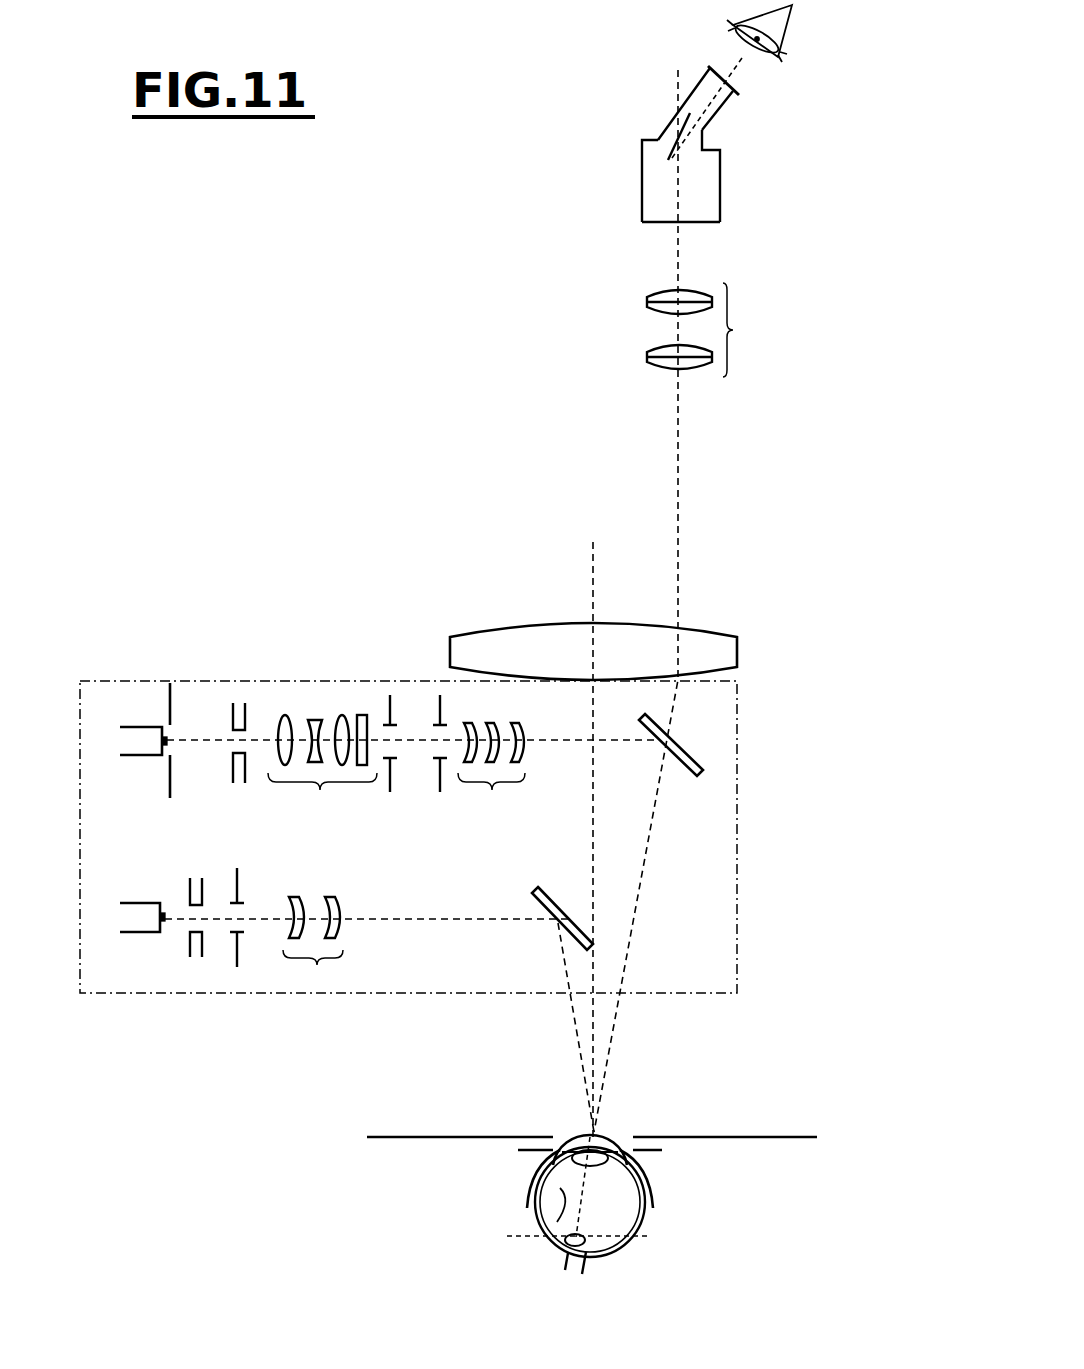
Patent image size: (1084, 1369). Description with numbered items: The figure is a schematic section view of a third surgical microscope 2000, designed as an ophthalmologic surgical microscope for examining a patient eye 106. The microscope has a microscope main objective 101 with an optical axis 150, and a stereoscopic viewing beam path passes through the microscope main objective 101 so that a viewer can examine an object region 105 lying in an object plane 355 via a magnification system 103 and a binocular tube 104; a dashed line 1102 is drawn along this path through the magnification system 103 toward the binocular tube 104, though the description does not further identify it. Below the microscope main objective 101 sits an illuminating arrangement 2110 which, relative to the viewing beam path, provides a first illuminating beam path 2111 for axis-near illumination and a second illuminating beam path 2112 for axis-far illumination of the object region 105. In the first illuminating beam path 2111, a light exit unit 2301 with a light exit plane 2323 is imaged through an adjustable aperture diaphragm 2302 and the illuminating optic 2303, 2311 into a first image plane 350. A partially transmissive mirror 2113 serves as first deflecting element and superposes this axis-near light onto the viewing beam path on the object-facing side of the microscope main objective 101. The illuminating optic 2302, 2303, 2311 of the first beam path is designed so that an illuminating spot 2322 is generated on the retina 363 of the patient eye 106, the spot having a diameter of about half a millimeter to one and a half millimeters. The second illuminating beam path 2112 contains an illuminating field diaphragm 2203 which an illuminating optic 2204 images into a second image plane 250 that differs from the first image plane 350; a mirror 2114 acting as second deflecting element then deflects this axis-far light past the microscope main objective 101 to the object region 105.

The binocular tube 104 is at (705, 190).
The observation optical axis 1102 is at (680, 258).
The magnification system 103 is at (733, 330).
The optical axis 150 is at (595, 570).
The microscope main objective 101 is at (735, 655).
The surgical microscope 2000 is at (363, 330).
The illuminating arrangement 2110 is at (297, 681).
The light exit unit 2301 is at (184, 730).
The light exit plane 2323 is at (168, 773).
The adjustable aperture diaphragm 2302 is at (237, 702).
The illuminating optic 2303 is at (320, 790).
The first illuminating beam path 2111 is at (408, 740).
The illuminating optic 2311 is at (492, 790).
The mirror 2113 is at (697, 762).
The second illuminating beam path 2112 is at (413, 924).
The illuminating field diaphragm 2203 is at (237, 952).
The illuminating optic 2204 is at (317, 965).
The mirror 2114 is at (575, 920).
The object plane 355 is at (733, 1136).
The object region 105 is at (618, 1120).
The patient eye 106 is at (640, 1235).
The second image plane 250 is at (656, 1155).
The retina 363 is at (560, 1188).
The first image plane 350 is at (503, 1219).
The illuminating spot 2322 is at (570, 1250).